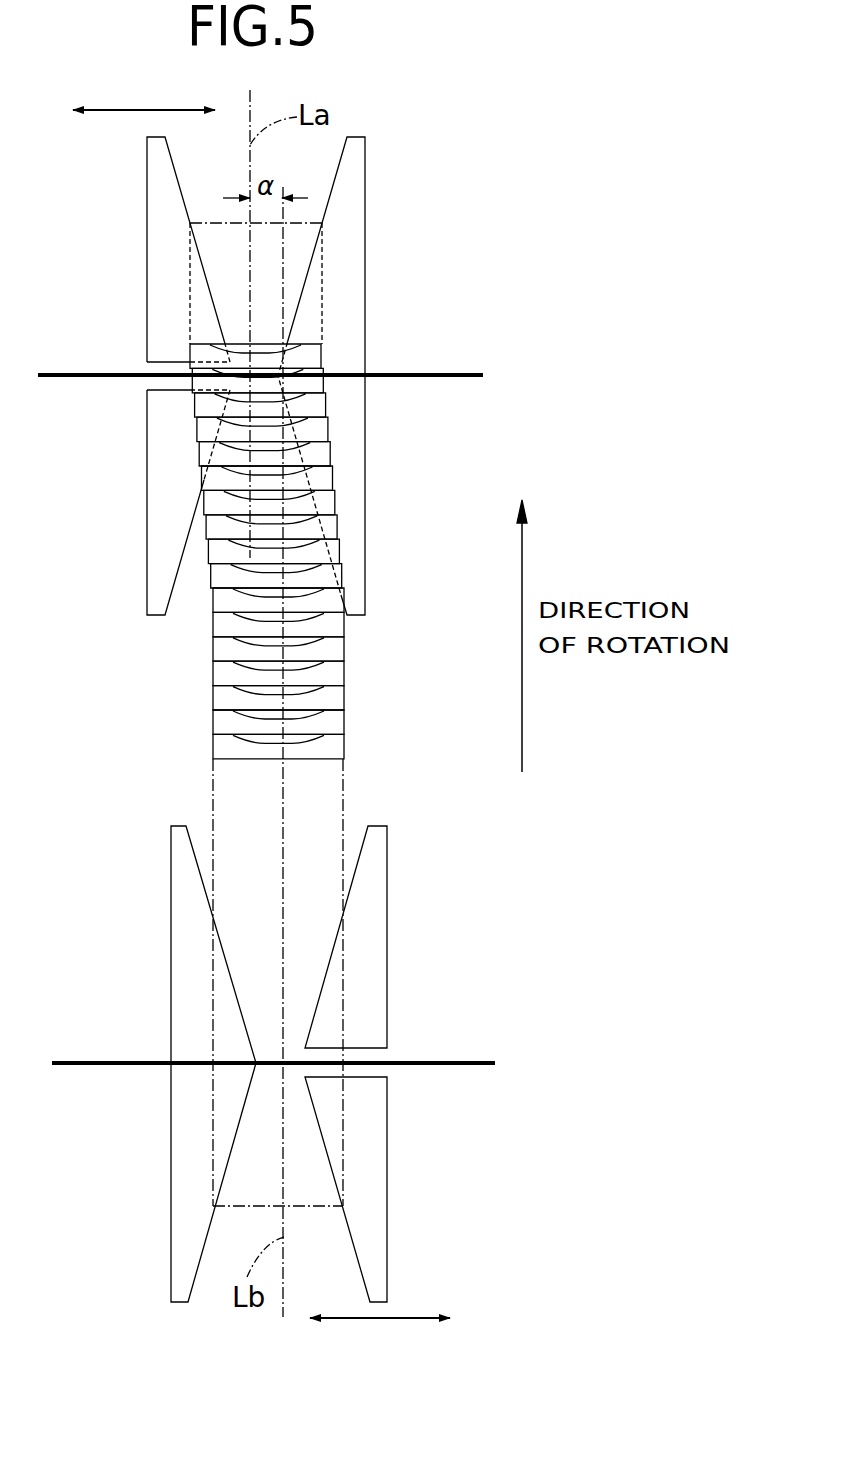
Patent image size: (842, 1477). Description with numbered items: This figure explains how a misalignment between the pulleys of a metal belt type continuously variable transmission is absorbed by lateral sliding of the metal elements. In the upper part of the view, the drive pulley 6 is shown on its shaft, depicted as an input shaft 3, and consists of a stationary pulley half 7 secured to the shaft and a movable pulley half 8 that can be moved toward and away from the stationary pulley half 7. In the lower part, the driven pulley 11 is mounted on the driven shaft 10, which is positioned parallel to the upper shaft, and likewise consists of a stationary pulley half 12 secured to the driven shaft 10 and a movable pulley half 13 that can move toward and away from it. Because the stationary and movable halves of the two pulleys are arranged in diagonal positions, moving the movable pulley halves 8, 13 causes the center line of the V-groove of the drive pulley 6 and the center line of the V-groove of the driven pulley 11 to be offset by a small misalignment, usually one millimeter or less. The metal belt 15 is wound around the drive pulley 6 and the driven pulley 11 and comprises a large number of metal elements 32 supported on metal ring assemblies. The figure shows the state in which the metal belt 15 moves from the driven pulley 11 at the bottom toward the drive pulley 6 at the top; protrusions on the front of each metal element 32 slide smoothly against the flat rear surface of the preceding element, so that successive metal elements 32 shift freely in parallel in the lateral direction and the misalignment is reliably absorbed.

The input shaft 3 is at (447, 372).
The drive pulley 6 is at (280, 376).
The stationary pulley half 7 is at (365, 320).
The movable pulley half 8 is at (163, 287).
The driven shaft 10 is at (448, 1060).
The driven pulley 11 is at (305, 1064).
The stationary pulley half 12 is at (187, 991).
The movable pulley half 13 is at (368, 965).
The metal belt 15 is at (314, 775).
The metal element 32 is at (225, 723).